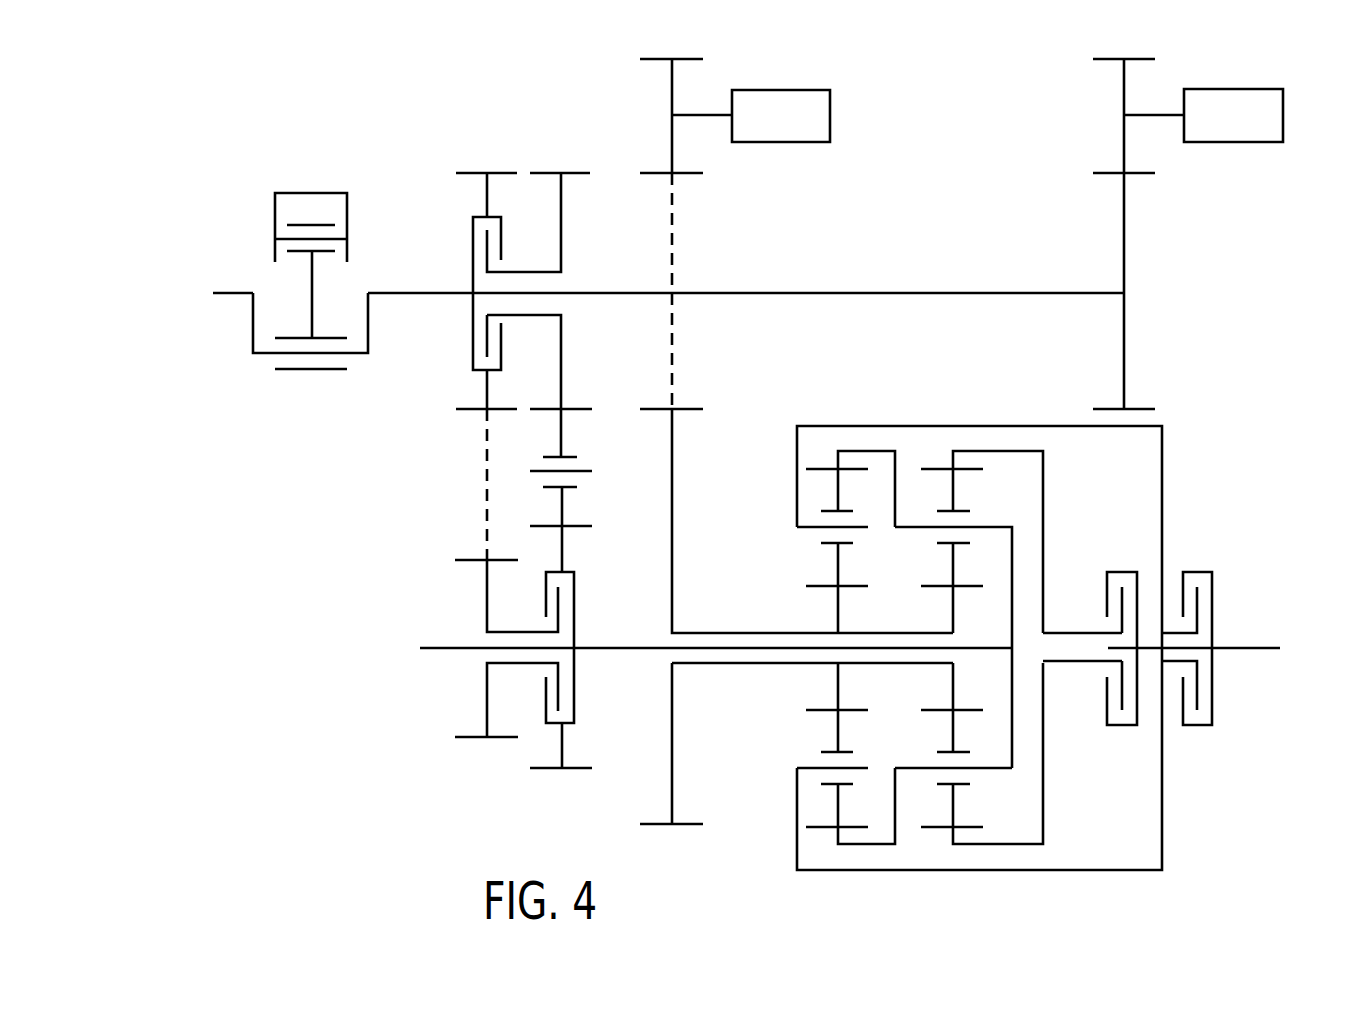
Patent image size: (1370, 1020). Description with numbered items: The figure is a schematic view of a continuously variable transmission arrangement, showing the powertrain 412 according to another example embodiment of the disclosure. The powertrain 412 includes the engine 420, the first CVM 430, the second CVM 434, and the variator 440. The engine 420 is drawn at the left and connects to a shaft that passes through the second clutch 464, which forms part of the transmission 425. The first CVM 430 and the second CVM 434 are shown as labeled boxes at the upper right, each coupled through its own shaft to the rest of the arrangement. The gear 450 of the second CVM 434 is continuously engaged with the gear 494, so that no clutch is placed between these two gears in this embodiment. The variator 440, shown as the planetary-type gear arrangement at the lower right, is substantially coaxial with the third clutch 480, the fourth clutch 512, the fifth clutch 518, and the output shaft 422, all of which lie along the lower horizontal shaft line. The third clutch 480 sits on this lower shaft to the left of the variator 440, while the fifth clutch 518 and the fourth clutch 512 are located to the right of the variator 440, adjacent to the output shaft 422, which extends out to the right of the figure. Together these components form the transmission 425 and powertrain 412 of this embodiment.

The powertrain 412 is at (375, 105).
The engine 420 is at (278, 168).
The second clutch 464 is at (445, 272).
The transmission 425 is at (401, 787).
The third clutch 480 is at (592, 593).
The output shaft 422 is at (1248, 645).
The gear 450 is at (670, 95).
The gear 494 is at (672, 563).
The second CVM 434 is at (786, 90).
The first CVM 430 is at (1233, 89).
The variator 440 is at (828, 893).
The fifth clutch 518 is at (1123, 565).
The fourth clutch 512 is at (1197, 527).